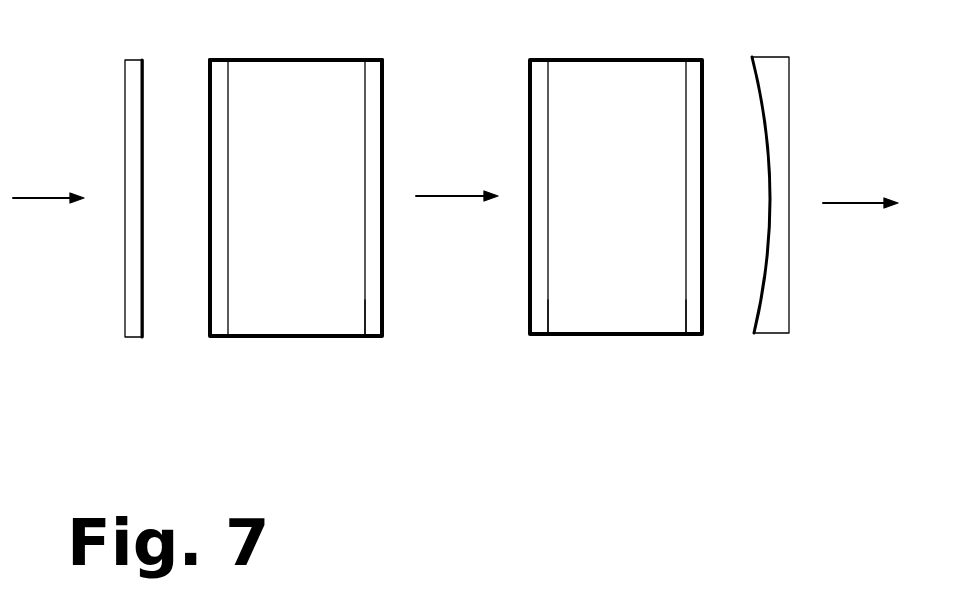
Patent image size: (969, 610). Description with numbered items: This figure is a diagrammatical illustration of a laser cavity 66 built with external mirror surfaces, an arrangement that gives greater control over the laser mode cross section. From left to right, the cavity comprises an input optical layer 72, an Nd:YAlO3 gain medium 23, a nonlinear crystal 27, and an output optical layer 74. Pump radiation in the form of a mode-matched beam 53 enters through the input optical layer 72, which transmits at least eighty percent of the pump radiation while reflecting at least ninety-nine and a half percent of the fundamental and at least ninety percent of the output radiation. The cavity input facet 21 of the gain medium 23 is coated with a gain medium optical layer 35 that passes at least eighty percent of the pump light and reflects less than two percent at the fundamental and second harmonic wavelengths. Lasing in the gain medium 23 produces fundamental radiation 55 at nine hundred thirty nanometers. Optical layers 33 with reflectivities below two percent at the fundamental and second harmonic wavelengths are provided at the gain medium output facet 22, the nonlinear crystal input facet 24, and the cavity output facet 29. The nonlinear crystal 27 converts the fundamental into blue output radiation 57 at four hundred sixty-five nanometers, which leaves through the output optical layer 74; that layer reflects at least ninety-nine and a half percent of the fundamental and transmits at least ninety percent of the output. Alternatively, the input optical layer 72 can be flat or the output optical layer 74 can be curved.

The laser cavity 66 is at (455, 239).
The input optical layer 72 is at (143, 320).
The cavity input facet 21 is at (225, 80).
The gain medium 23 is at (308, 58).
The gain medium optical layer 35 is at (229, 318).
The gain medium output facet 22 is at (365, 292).
The nonlinear crystal 27 is at (625, 58).
The nonlinear crystal input facet 24 is at (548, 288).
The cavity output facet 29 is at (684, 77).
The optical layers 33 is at (366, 318).
The output optical layer 74 is at (757, 317).
The mode-matched beam 53 is at (29, 198).
The fundamental radiation 55 is at (430, 196).
The blue output radiation 57 is at (835, 203).